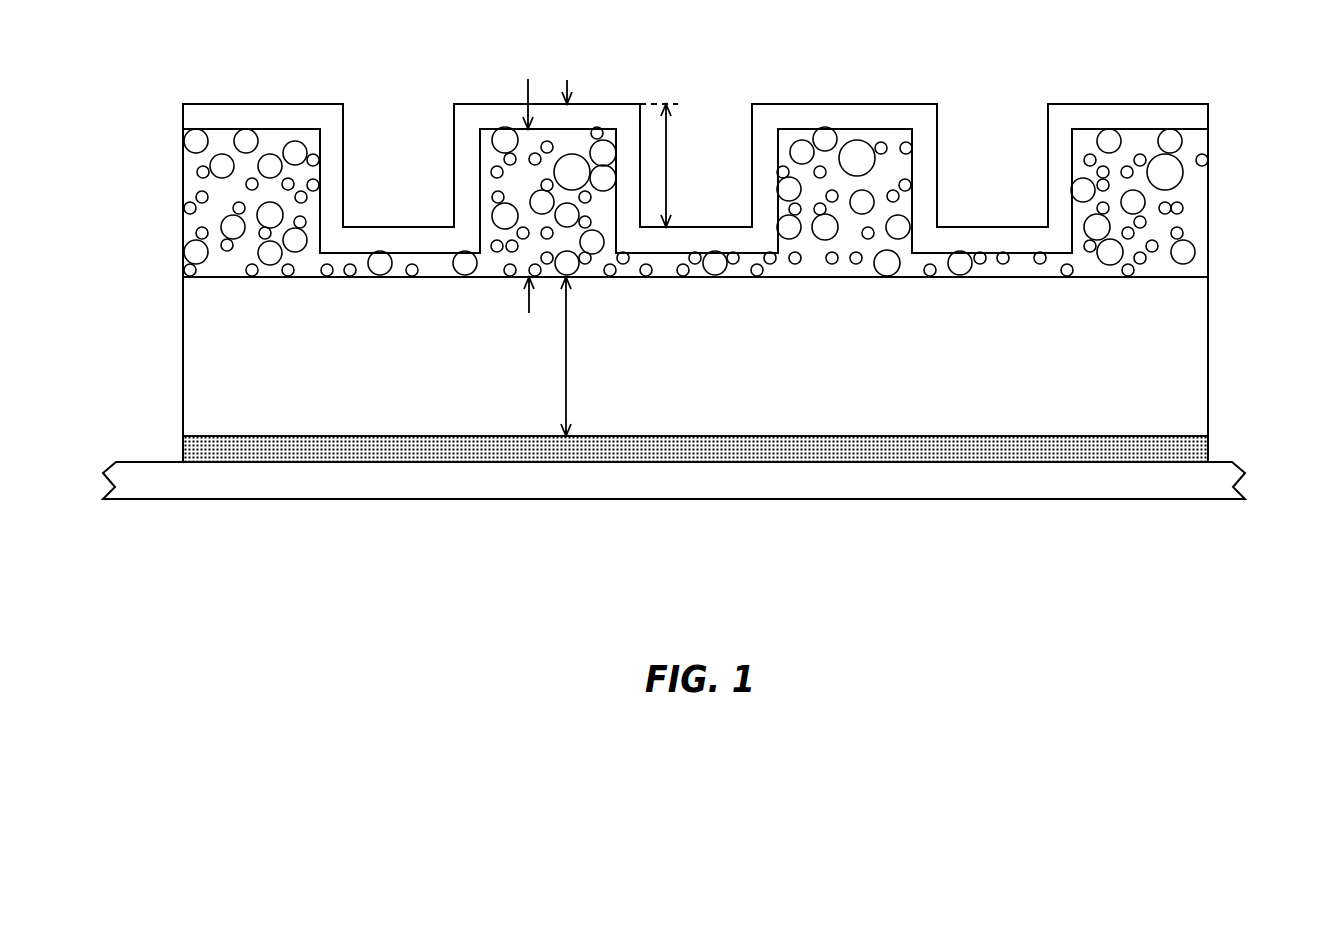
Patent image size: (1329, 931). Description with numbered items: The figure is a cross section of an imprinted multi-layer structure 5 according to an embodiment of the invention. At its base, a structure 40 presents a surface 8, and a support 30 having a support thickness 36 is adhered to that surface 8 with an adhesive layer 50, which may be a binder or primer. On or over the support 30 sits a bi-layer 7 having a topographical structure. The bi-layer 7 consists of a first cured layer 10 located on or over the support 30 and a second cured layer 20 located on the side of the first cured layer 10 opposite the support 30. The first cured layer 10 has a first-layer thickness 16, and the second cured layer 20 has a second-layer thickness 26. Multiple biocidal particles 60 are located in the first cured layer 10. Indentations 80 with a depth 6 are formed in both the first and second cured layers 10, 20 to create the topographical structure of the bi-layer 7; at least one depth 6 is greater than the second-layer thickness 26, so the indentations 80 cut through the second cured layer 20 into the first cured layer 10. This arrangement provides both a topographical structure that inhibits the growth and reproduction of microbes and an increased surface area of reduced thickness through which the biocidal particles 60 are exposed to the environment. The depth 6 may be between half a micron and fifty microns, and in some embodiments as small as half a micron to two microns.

The imprinted multi-layer structure 5 is at (1167, 45).
The bi-layer 7 is at (1283, 105).
The first cured layer 10 is at (1208, 203).
The second cured layer 20 is at (1208, 117).
The support 30 is at (1208, 345).
The structure 40 is at (1240, 475).
The adhesive layer 50 is at (1208, 453).
The biocidal particles 60 is at (237, 129).
The indentations 80 is at (402, 90).
The second-layer thickness 26 is at (567, 82).
The depth 6 is at (667, 170).
The first-layer thickness 16 is at (528, 311).
The support thickness 36 is at (568, 355).
The surface 8 is at (151, 462).